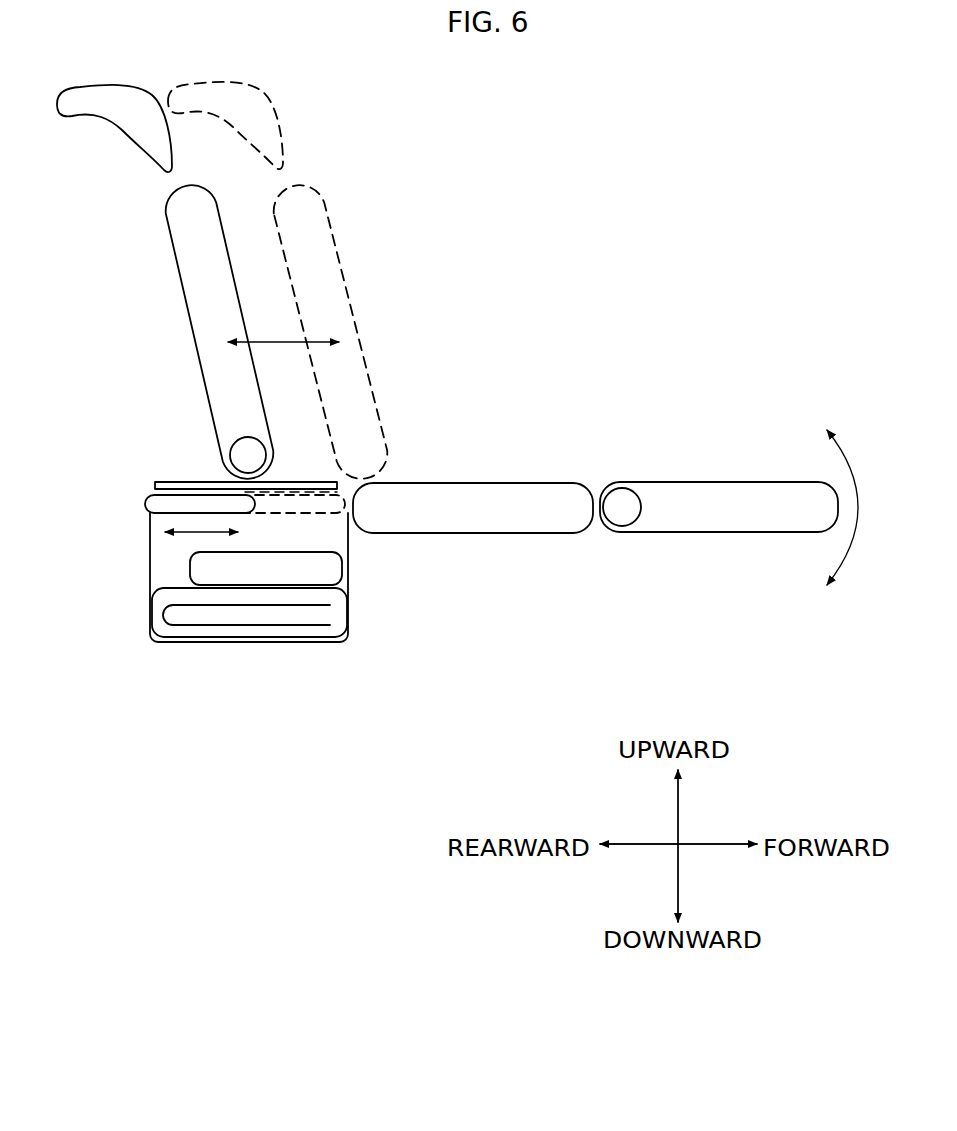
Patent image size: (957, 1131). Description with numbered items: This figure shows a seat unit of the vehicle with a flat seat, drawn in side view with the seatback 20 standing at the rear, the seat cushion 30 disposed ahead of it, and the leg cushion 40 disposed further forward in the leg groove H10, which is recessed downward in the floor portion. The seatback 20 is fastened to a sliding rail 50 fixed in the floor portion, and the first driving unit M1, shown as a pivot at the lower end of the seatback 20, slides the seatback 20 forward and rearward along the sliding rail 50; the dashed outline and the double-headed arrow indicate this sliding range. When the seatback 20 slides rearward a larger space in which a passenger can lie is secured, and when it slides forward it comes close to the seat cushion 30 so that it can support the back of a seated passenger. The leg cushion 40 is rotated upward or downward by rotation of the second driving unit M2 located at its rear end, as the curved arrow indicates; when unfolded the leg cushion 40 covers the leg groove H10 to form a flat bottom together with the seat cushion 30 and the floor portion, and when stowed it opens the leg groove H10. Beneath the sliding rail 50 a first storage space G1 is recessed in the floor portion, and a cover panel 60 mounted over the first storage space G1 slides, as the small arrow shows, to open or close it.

The seatback 20 is at (193, 275).
The first driving unit M1 is at (240, 453).
The sliding rail 50 is at (157, 485).
The cover panel 60 is at (148, 502).
The first storage space G1 is at (243, 598).
The seat cushion 30 is at (472, 493).
The second driving unit M2 is at (620, 503).
The leg cushion 40 is at (732, 502).
The leg groove H10 is at (733, 560).